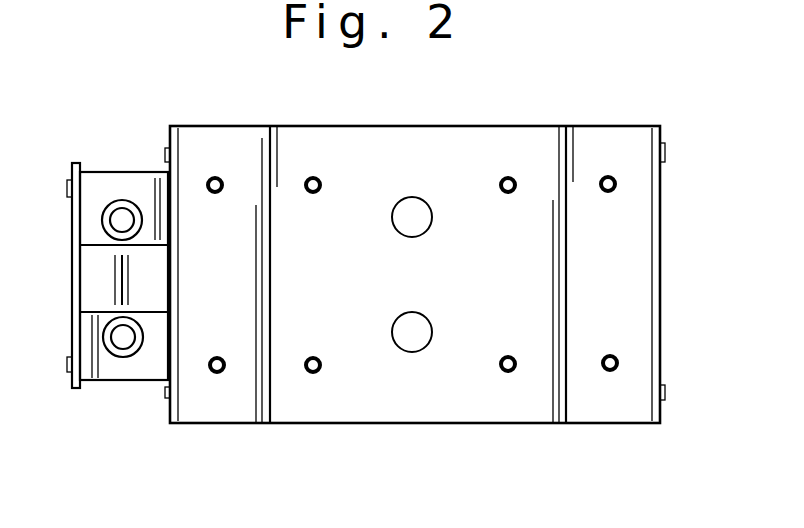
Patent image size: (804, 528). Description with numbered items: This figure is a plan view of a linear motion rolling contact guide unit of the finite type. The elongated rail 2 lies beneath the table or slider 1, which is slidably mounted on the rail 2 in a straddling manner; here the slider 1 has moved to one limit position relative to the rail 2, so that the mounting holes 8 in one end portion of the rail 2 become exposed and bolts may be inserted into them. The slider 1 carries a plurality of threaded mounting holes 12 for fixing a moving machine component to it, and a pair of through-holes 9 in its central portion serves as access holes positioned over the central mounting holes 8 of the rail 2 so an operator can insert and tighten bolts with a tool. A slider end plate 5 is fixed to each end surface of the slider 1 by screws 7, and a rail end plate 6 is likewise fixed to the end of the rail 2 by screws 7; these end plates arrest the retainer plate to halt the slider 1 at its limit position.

The slider 1 is at (336, 147).
The rail 2 is at (106, 186).
The slider end plate 5 is at (166, 192).
The rail end plate 6 is at (77, 392).
The screws 7 is at (70, 368).
The mounting holes 8 is at (123, 347).
The through-holes 9 is at (412, 206).
The mounting holes 12 is at (215, 176).